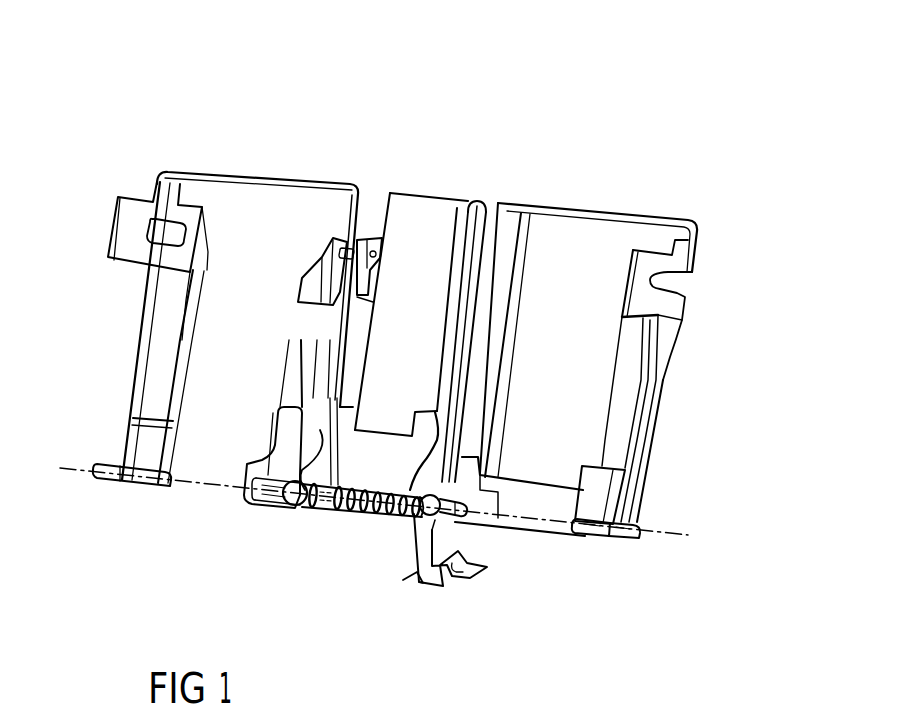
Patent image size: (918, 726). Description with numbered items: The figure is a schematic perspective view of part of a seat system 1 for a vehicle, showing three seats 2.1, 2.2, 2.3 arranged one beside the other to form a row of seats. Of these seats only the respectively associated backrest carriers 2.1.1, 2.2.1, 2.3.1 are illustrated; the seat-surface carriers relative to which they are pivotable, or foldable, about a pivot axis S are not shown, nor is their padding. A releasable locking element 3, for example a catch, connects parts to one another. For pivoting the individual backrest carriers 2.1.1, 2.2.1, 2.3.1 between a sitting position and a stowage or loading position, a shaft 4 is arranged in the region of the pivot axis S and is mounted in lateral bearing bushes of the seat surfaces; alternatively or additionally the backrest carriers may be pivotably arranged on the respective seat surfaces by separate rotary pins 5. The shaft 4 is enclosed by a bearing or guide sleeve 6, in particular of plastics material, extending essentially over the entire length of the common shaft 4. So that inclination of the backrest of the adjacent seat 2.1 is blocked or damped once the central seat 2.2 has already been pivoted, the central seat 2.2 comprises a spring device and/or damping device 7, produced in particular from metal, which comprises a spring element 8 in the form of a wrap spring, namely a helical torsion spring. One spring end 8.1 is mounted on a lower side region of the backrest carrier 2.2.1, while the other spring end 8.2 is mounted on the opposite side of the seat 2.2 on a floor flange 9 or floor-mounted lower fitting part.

The seat system 1 is at (634, 121).
The seat 2.1 is at (270, 167).
The backrest carrier 2.1.1 is at (158, 353).
The seat 2.2 is at (450, 186).
The backrest carrier 2.2.1 is at (468, 225).
The seat 2.3 is at (662, 212).
The backrest carrier 2.3.1 is at (633, 377).
The releasable locking element 3 is at (360, 238).
The shaft 4 is at (395, 518).
The rotary pin 5 is at (143, 480).
The guide sleeve 6 is at (315, 503).
The spring device and/or damping device 7 is at (345, 517).
The spring element 8 is at (370, 513).
The spring end 8.1 is at (280, 510).
The spring end 8.2 is at (407, 515).
The floor flange 9 is at (443, 540).
The pivot axis S is at (688, 534).